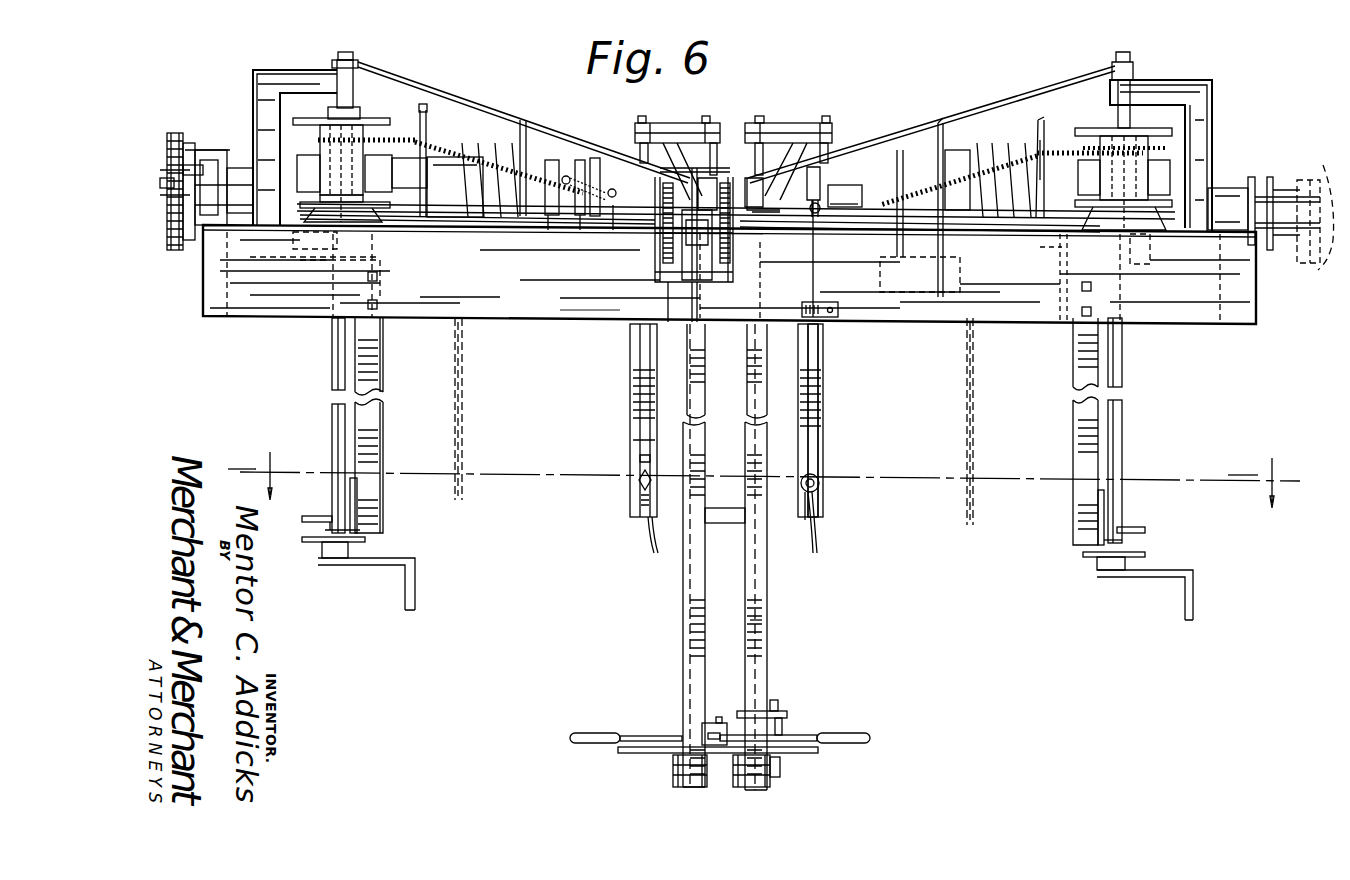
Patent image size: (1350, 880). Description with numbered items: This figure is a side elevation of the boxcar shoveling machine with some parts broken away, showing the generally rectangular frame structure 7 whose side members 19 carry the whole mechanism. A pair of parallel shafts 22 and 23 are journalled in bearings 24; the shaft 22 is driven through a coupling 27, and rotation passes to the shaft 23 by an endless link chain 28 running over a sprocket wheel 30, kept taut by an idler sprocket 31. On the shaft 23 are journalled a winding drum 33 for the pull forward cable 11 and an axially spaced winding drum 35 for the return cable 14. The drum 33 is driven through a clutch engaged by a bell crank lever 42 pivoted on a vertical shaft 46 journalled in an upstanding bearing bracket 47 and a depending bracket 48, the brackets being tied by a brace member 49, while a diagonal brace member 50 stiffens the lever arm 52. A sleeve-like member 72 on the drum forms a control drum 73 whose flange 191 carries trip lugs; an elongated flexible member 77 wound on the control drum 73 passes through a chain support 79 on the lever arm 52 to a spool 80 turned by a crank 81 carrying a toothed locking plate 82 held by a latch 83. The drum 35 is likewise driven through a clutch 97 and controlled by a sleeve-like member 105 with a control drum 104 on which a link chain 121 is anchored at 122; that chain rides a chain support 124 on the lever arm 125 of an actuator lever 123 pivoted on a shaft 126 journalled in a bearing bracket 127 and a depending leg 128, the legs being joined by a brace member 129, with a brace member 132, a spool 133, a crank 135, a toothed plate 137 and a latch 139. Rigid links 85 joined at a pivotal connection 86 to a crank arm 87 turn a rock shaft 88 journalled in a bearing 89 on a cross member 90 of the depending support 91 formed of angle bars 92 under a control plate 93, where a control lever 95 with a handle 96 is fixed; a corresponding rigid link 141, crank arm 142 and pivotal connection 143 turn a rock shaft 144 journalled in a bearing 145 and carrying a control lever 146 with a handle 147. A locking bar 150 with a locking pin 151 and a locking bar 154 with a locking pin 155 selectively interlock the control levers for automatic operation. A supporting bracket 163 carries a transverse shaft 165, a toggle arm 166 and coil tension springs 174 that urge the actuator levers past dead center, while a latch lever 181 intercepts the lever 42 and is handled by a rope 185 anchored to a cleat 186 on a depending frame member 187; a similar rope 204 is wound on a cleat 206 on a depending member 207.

The frame structure 7 is at (905, 324).
The pull forward cable 11 is at (967, 410).
The return cable 14 is at (463, 400).
The side member 19 is at (578, 318).
The shaft 22 is at (1283, 190).
The shaft 23 is at (1073, 242).
The bearing 24 is at (1228, 196).
The coupling 27 is at (1310, 170).
The endless link chain 28 is at (176, 255).
The sprocket wheel 30 is at (178, 252).
The idler sprocket 31 is at (186, 140).
The winding drum 33 is at (962, 155).
The winding drum 35 is at (437, 187).
The bell crank lever 42 is at (971, 228).
The shaft 46 is at (1133, 66).
The upstanding bearing bracket 47 is at (1212, 112).
The depending bracket 48 is at (1073, 400).
The brace member 49 is at (1098, 538).
The diagonal brace member 50 is at (1032, 80).
The lever arm 52 is at (905, 230).
The sleeve-like member 72 is at (908, 178).
The control drum 73 is at (845, 196).
The elongated flexible member 77 is at (1058, 150).
The chain support 79 is at (962, 188).
The spool 80 is at (1150, 150).
The crank 81 is at (1142, 578).
The toothed locking plate 82 is at (1088, 560).
The latch 83 is at (1140, 527).
The rigid link 85 is at (826, 116).
The pivotal connection 86 is at (830, 130).
The crank arm 87 is at (785, 125).
The rock shaft 88 is at (758, 116).
The bearing 89 is at (745, 785).
The cross member 90 is at (780, 775).
The depending support 91 is at (778, 623).
The depending angle bar 92 is at (748, 436).
The control plate 93 is at (818, 753).
The control lever 95 is at (800, 735).
The handle 96 is at (850, 735).
The clutch 97 is at (395, 150).
The control drum 104 is at (595, 162).
The sleeve-like member 105 is at (553, 152).
The link chain 121 is at (580, 230).
The anchor 122 is at (614, 230).
The actuator lever 123 is at (549, 230).
The chain support 124 is at (447, 142).
The lever arm 125 is at (478, 220).
The shaft 126 is at (355, 100).
The bearing bracket 127 is at (270, 78).
The depending leg 128 is at (372, 420).
The brace member 129 is at (357, 516).
The brace member 132 is at (505, 108).
The spool 133 is at (345, 145).
The crank 135 is at (378, 565).
The toothed plate 137 is at (315, 545).
The latch 139 is at (322, 516).
The rigid link 141 is at (640, 150).
The crank arm 142 is at (685, 125).
The pivotal connection 143 is at (642, 118).
The rock shaft 144 is at (709, 116).
The bearing 145 is at (690, 785).
The control lever 146 is at (640, 737).
The handle 147 is at (592, 735).
The locking bar 150 is at (710, 722).
The locking pin 151 is at (718, 730).
The locking bar 154 is at (782, 710).
The locking pin 155 is at (778, 700).
The supporting bracket 163 is at (672, 318).
The transverse shaft 165 is at (720, 274).
The toggle arm 166 is at (660, 262).
The coil tension spring 174 is at (728, 185).
The latch lever 181 is at (822, 220).
The rope 185 is at (822, 392).
The cleat 186 is at (818, 478).
The depending frame member 187 is at (820, 430).
The flange 191 is at (830, 165).
The rope 204 is at (650, 540).
The cleat 206 is at (632, 502).
The depending member 207 is at (640, 426).